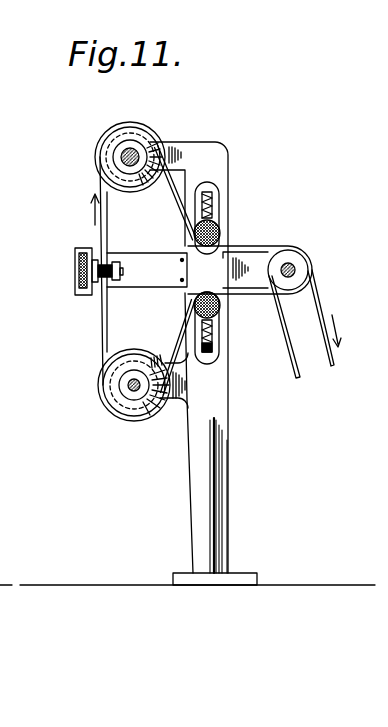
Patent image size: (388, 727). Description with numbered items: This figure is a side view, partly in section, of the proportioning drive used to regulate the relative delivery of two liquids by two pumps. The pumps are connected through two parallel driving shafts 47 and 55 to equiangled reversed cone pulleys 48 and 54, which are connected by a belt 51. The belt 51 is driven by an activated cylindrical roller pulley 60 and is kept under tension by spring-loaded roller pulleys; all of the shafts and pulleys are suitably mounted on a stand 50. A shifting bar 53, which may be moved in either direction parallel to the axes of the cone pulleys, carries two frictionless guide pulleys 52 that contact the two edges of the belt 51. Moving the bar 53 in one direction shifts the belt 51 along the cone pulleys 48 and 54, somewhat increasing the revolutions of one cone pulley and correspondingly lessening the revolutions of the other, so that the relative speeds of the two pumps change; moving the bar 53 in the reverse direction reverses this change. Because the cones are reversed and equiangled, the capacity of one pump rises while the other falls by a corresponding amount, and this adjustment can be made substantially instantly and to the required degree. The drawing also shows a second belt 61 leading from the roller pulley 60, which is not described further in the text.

The driving shaft 47 is at (121, 152).
The cone pulley 48 is at (122, 137).
The stand 50 is at (217, 482).
The belt 51 is at (102, 318).
The guide pulley 52 is at (111, 262).
The shifting bar 53 is at (75, 262).
The cone pulley 54 is at (98, 398).
The driving shaft 55 is at (130, 395).
The cylindrical roller pulley 60 is at (300, 267).
The belt 61 is at (322, 304).